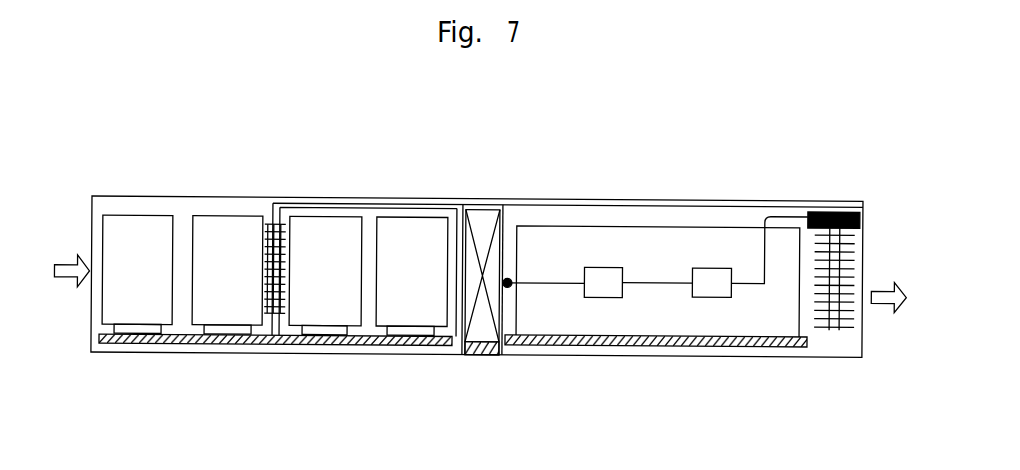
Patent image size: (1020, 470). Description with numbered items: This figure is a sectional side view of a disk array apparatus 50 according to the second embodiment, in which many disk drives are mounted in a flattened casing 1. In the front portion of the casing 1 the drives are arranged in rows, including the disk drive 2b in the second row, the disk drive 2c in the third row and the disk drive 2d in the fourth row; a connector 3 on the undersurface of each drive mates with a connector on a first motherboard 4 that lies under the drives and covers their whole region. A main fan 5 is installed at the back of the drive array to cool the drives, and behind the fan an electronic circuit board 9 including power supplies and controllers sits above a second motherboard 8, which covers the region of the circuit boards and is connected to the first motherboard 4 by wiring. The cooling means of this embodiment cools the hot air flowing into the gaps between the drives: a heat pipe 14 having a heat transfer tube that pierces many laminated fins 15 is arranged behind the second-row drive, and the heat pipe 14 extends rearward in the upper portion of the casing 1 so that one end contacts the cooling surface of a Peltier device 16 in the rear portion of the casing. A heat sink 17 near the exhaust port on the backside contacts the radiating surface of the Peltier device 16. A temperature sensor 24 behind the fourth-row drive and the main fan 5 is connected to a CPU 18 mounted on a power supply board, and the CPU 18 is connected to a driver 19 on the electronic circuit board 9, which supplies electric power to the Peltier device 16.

The casing 1 is at (198, 195).
The disk drive in the second row 2b is at (217, 237).
The disk drive in the third row 2c is at (348, 315).
The disk drive in the fourth row 2d is at (425, 308).
The connector 3 is at (150, 324).
The first motherboard 4 is at (290, 338).
The main fan 5 is at (488, 224).
The second motherboard 8 is at (637, 336).
The electronic circuit board 9 is at (685, 259).
The heat pipe 14 is at (413, 200).
The laminated fins 15 is at (280, 231).
The Peltier device 16 is at (826, 208).
The heat sink 17 is at (835, 310).
The CPU 18 is at (597, 286).
The driver 19 is at (720, 289).
The temperature sensor 24 is at (510, 285).
The disk array apparatus 50 is at (679, 185).